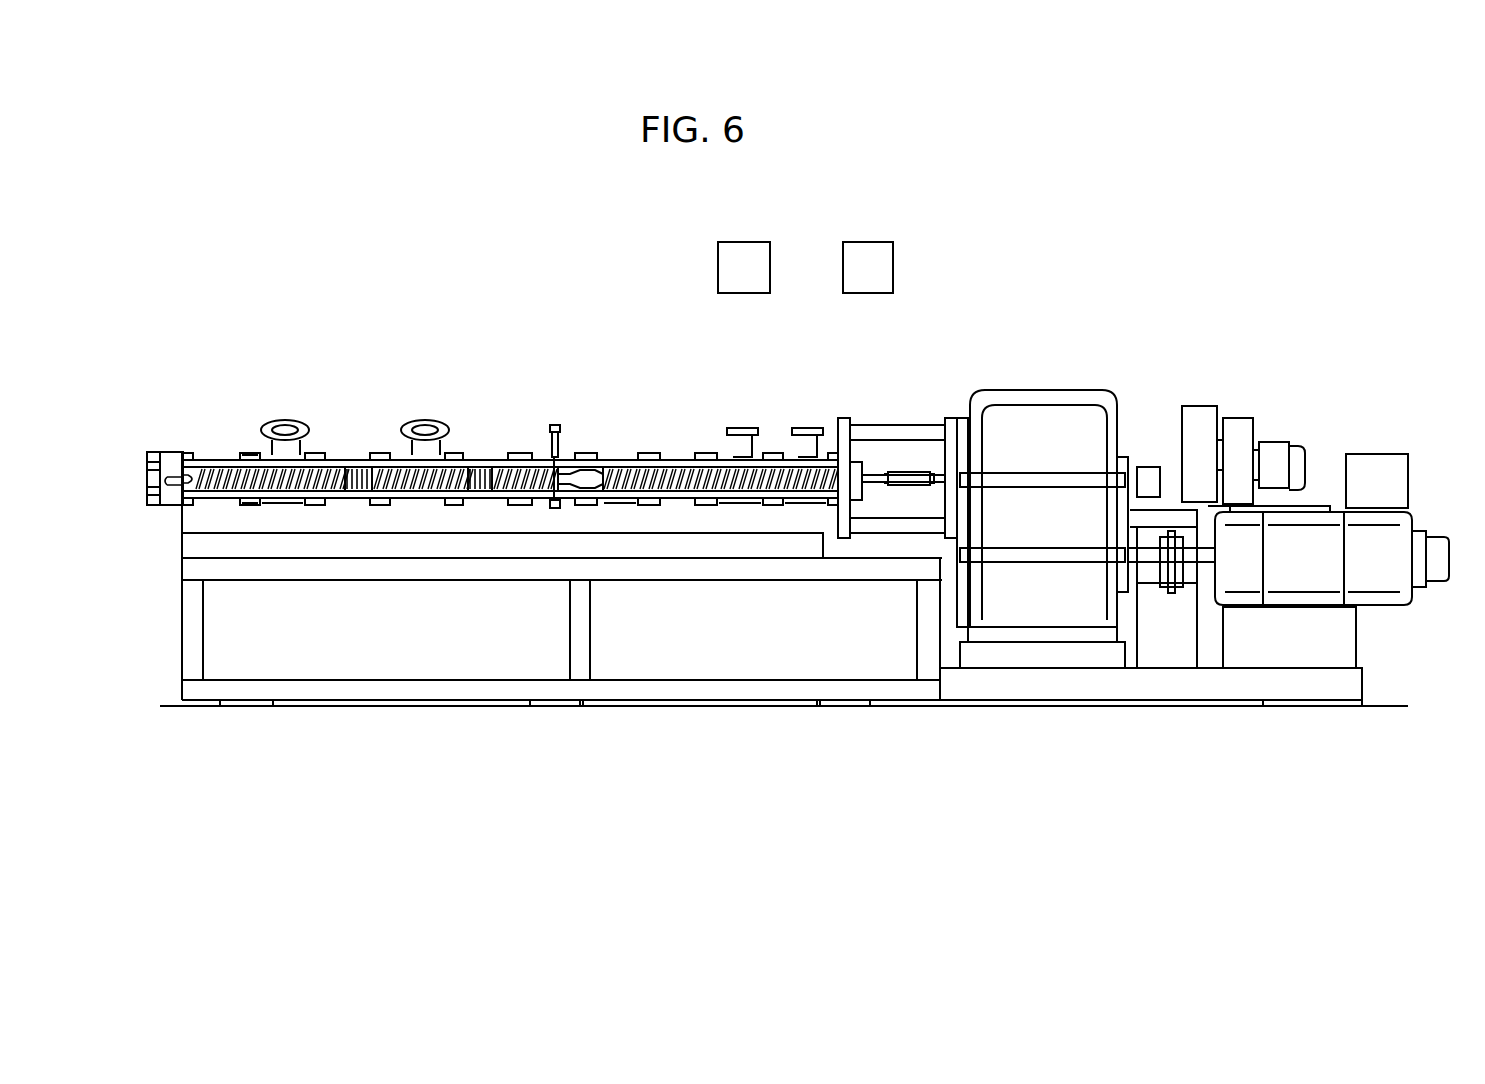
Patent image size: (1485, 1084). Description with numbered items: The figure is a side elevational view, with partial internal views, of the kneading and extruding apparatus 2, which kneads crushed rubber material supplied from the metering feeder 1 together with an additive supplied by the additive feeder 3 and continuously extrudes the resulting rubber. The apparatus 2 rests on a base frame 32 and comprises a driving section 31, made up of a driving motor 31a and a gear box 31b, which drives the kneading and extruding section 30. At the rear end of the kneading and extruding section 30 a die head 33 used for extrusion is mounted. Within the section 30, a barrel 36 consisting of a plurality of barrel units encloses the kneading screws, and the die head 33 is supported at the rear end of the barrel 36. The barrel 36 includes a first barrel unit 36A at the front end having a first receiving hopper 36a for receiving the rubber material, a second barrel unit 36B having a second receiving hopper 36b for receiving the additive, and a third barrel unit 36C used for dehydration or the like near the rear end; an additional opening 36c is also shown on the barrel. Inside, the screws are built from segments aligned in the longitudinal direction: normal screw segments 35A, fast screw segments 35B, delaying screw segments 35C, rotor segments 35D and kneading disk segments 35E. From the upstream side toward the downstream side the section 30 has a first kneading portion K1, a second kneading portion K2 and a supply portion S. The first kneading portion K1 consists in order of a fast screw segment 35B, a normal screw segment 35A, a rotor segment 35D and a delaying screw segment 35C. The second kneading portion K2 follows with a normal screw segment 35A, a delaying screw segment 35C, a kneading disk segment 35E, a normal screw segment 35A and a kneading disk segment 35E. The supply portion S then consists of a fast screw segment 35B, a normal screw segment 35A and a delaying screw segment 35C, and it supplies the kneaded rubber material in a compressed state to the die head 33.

The metering feeder 1 is at (843, 268).
The kneading and extruding apparatus 2 is at (1227, 333).
The additive feeder 3 is at (744, 293).
The kneading and extruding section 30 is at (462, 456).
The driving section 31 is at (1277, 390).
The driving motor 31a is at (1317, 512).
The gear box 31b is at (1117, 423).
The base frame 32 is at (900, 702).
The die head 33 is at (165, 452).
The normal screw segment 35A is at (210, 462).
The fast screw segment 35B is at (265, 462).
The delaying screw segment 35C is at (207, 462).
The rotor segment 35D is at (593, 462).
The kneading disk segment 35E is at (350, 462).
The barrel 36 is at (622, 505).
The first barrel unit 36A is at (808, 505).
The second barrel unit 36B is at (733, 505).
The third barrel unit 36C is at (292, 505).
The first receiving hopper 36a is at (830, 447).
The second receiving hopper 36b is at (735, 425).
The feed port 36c is at (284, 420).
The first kneading portion K1 is at (681, 466).
The second kneading portion K2 is at (365, 462).
The supply portion S is at (230, 490).